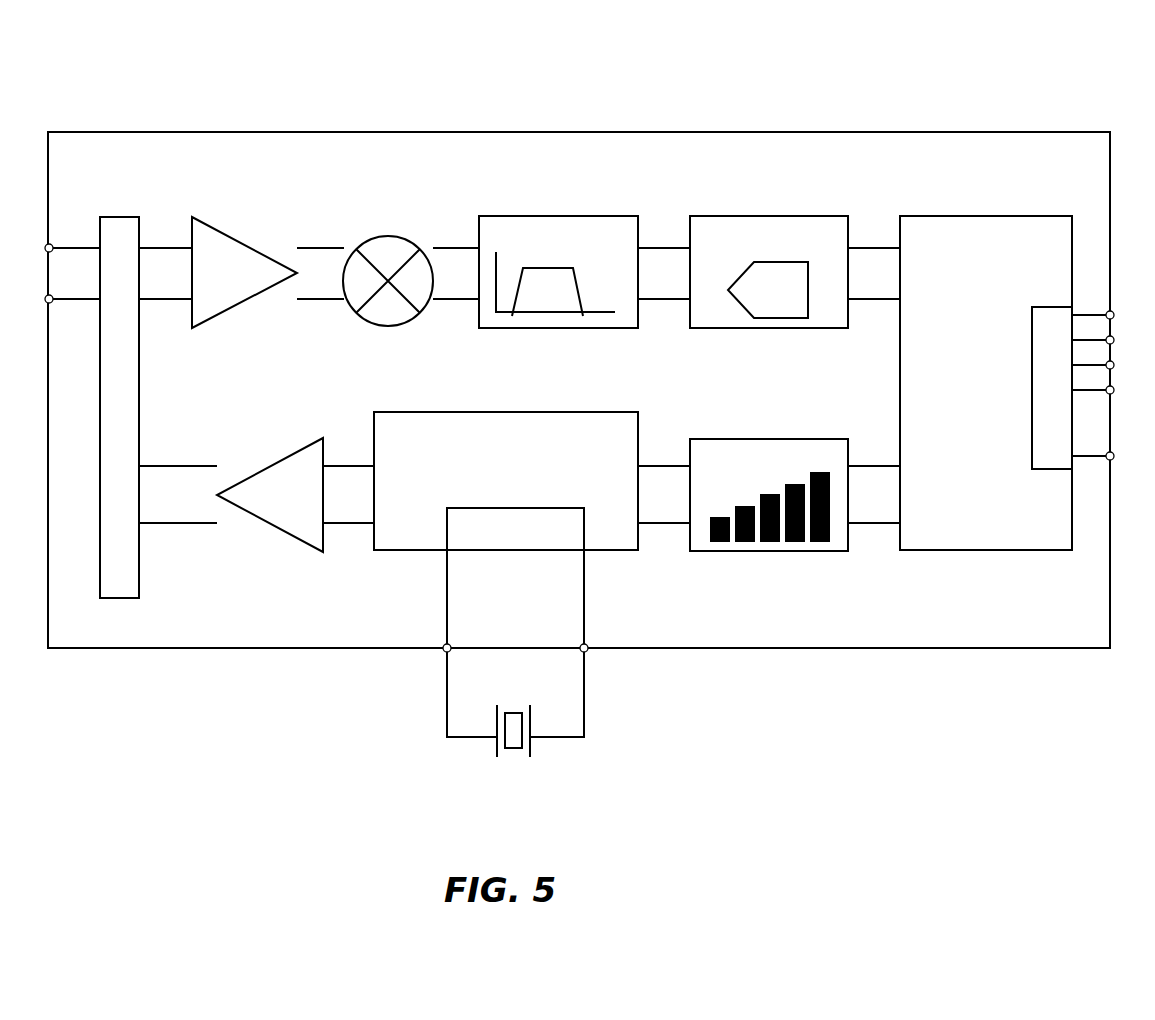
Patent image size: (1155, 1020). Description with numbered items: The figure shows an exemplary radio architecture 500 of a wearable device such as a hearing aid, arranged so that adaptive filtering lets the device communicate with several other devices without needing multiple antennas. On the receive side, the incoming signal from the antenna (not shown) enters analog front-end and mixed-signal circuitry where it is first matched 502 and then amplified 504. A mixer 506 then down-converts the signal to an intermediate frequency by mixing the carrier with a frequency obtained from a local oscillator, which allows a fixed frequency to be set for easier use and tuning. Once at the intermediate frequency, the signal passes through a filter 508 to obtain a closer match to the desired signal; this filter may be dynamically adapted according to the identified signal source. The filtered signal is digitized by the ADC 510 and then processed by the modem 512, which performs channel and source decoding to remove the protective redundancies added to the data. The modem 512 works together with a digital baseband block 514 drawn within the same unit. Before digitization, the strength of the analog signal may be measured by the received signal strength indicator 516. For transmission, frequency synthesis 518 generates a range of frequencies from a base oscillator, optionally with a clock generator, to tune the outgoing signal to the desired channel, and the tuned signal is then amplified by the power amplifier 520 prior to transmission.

The architecture 500 is at (1056, 100).
The matching 502 is at (100, 217).
The amplification 504 is at (244, 272).
The mixer 506 is at (360, 237).
The filter 508 is at (558, 271).
The ADC 510 is at (769, 271).
The modem 512 is at (986, 383).
The digital baseband (DBB) 514 is at (987, 508).
The received signal strength indicator (RSSI) 516 is at (769, 495).
The frequency synthesis 518 is at (506, 481).
The power amplifier 520 is at (270, 495).